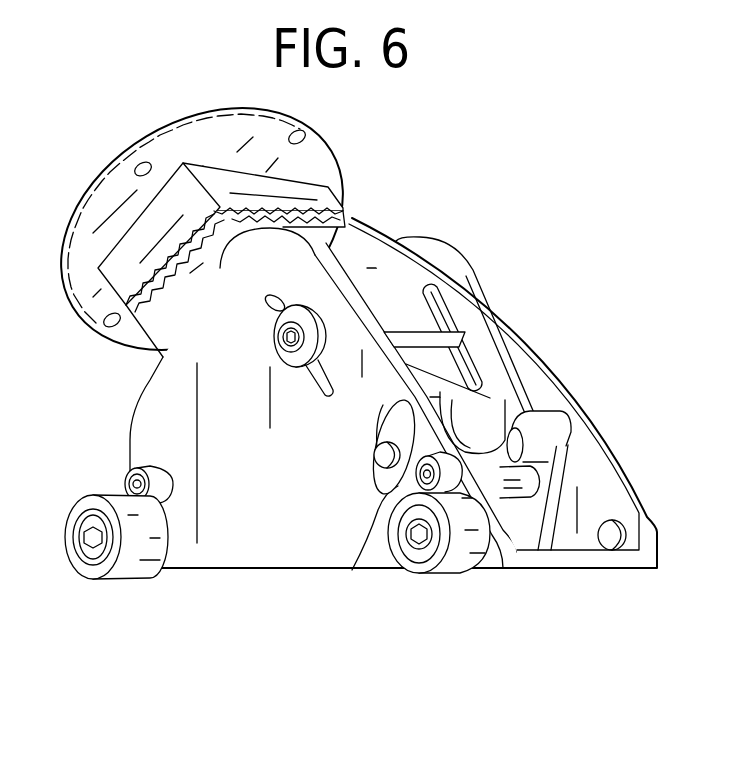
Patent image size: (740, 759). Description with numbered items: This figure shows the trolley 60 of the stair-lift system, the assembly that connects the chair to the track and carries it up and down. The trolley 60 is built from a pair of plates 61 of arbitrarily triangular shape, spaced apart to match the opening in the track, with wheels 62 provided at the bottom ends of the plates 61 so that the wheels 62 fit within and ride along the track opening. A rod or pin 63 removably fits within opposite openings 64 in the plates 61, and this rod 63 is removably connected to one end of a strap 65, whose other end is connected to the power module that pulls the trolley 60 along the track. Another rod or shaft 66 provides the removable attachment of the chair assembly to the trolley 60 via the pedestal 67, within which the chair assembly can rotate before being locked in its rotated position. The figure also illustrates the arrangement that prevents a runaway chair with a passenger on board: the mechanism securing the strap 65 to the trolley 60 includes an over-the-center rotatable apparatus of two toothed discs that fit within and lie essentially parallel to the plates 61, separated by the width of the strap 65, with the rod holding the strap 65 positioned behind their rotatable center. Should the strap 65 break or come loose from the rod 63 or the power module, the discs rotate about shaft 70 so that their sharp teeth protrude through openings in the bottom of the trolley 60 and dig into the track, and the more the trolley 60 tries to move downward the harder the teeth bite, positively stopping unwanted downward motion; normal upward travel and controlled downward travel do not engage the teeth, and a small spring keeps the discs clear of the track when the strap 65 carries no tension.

The trolley 60 is at (496, 202).
The plates 61 is at (554, 382).
The wheels 62 is at (150, 568).
The rod or pin 63 is at (373, 459).
The openings 64 is at (372, 490).
The strap 65 is at (454, 400).
The rod or shaft 66 is at (310, 318).
The pedestal 67 is at (307, 165).
The shaft 70 is at (360, 566).